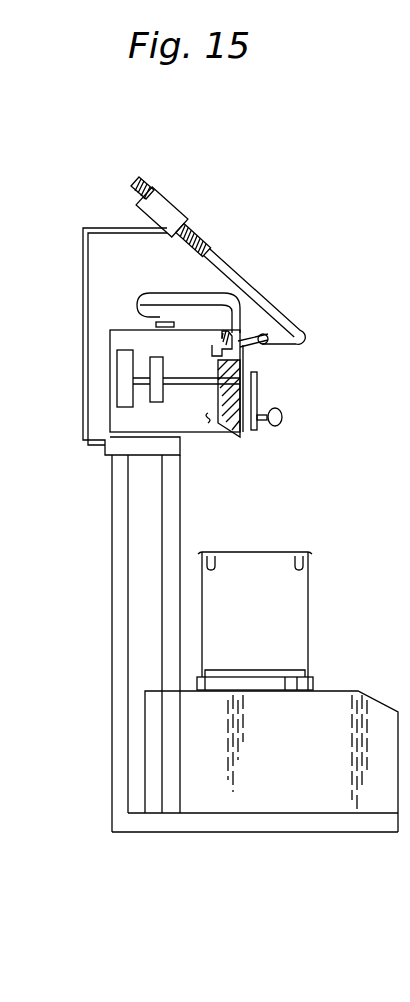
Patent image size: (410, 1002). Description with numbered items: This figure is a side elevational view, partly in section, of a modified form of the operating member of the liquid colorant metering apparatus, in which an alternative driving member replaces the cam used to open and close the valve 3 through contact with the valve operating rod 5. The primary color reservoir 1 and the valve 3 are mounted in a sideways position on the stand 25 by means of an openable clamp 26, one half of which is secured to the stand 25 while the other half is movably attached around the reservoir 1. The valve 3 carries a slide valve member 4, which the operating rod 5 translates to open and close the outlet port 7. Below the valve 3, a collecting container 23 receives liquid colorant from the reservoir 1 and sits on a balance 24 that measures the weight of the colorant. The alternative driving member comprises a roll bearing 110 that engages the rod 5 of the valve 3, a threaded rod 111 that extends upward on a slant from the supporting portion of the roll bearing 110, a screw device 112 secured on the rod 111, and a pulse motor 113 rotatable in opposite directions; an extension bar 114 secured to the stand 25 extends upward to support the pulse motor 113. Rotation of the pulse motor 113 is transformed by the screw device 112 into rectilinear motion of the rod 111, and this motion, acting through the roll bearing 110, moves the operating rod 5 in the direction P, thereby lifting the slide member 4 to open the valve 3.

The primary color reservoir 1 is at (116, 330).
The valve 3 is at (273, 424).
The slide valve member 4 is at (240, 438).
The valve operating rod 5 is at (266, 326).
The outlet port 7 is at (226, 432).
The collecting container 23 is at (310, 603).
The balance 24 is at (351, 691).
The stand 25 is at (110, 568).
The openable clamp 26 is at (136, 299).
The roll bearing 110 is at (288, 345).
The threaded rod 111 is at (244, 268).
The screw device 112 is at (180, 208).
The pulse motor 113 is at (138, 198).
The extension bar 114 is at (83, 290).
The direction P is at (258, 362).